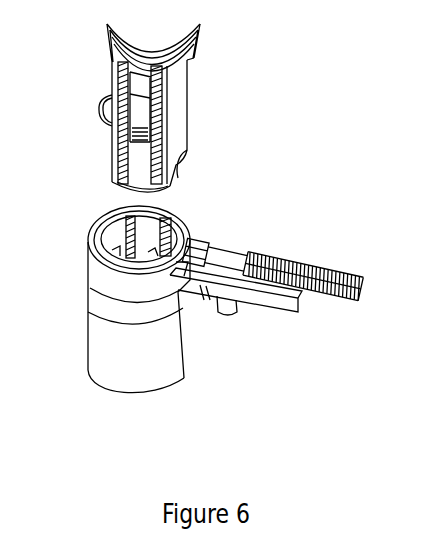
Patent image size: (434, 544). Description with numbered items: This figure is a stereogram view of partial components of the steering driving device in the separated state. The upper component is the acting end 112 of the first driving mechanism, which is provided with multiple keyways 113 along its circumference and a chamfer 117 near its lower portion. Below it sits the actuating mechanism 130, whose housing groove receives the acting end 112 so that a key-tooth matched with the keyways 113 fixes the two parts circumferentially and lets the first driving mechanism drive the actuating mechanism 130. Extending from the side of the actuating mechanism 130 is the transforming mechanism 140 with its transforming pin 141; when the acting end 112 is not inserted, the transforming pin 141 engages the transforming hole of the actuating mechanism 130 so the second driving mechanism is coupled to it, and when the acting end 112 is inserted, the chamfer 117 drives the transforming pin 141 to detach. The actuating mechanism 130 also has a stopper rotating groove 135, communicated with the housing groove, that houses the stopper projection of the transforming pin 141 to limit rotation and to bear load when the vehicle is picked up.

The acting end 112 is at (182, 96).
The keyways 113 is at (113, 148).
The chamfer 117 is at (181, 158).
The actuating mechanism 130 is at (101, 322).
The stopper rotating groove 135 is at (183, 290).
The transforming mechanism 140 is at (267, 309).
The transforming pin 141 is at (202, 283).